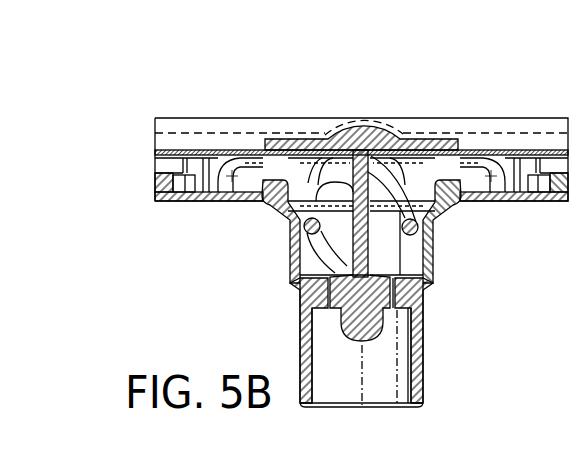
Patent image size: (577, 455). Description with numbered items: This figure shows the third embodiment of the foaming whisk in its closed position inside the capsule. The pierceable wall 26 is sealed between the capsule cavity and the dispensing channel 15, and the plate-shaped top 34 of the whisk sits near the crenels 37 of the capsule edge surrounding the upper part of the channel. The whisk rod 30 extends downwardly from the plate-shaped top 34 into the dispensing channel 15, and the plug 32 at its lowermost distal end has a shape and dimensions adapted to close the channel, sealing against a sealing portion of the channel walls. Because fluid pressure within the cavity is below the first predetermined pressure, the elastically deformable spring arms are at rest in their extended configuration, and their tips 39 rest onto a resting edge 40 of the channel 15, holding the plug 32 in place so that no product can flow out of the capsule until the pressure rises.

The dispensing channel 15 is at (357, 377).
The pierceable wall 26 is at (528, 132).
The rod 30 is at (420, 224).
The plug 32 is at (375, 309).
The plate-shaped top 34 is at (440, 138).
The crenels 37 is at (343, 183).
The tips of spring arms 39 is at (298, 283).
The resting edge 40 is at (407, 271).